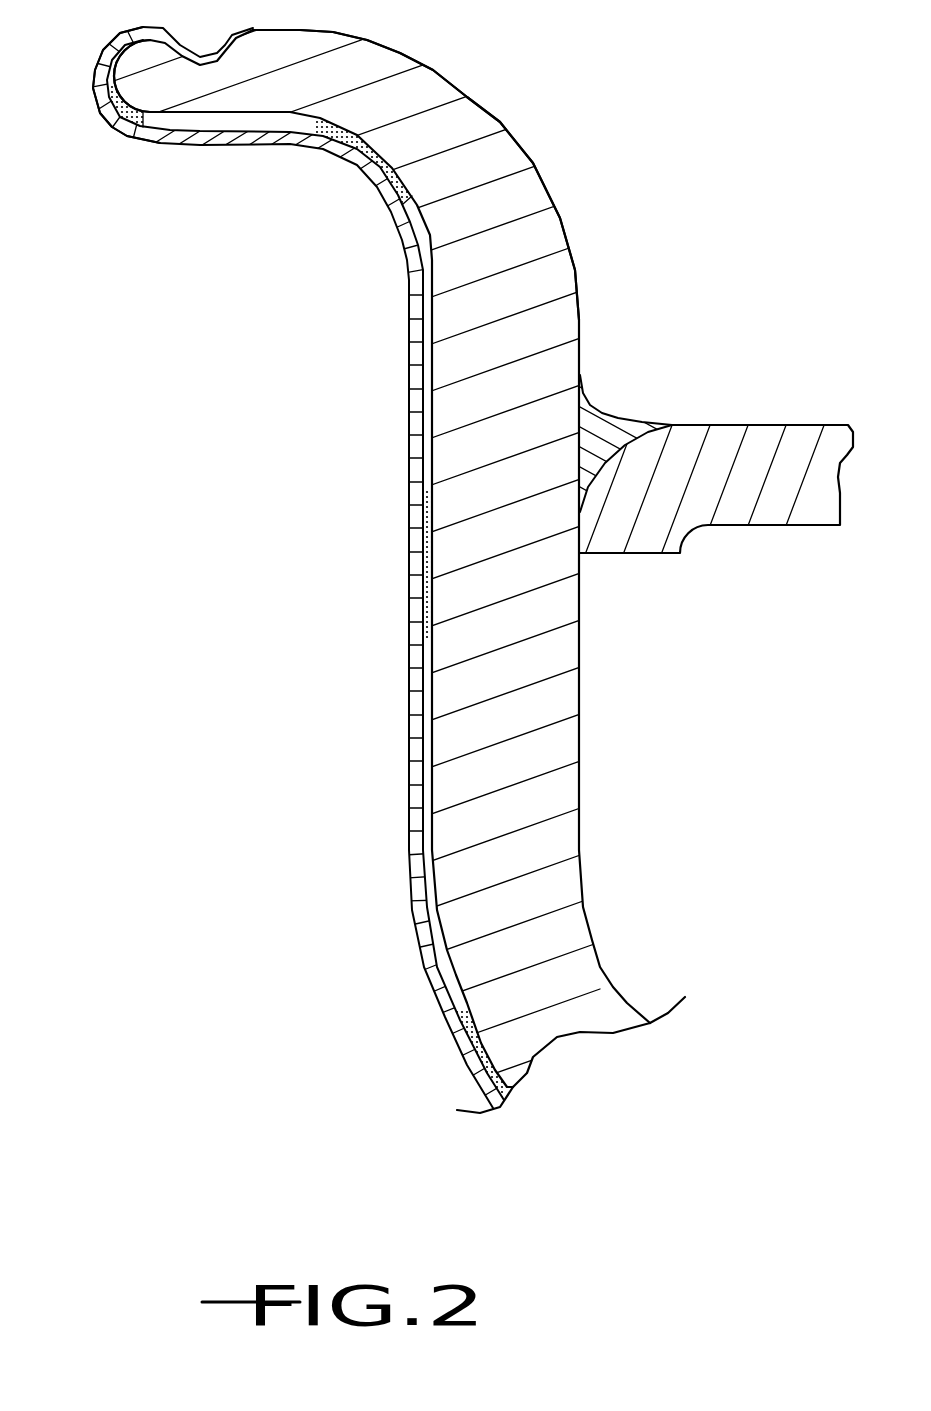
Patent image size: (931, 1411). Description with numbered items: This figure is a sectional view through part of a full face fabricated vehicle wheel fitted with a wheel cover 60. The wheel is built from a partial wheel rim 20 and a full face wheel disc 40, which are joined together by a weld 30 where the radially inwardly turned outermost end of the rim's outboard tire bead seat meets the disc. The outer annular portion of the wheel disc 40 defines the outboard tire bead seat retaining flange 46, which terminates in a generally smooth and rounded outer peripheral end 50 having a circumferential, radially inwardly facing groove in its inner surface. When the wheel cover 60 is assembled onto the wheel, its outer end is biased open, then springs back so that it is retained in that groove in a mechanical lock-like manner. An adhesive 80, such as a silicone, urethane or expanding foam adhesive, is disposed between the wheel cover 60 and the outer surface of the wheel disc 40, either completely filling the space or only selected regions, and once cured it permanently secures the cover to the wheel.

The wheel rim 20 is at (747, 545).
The weld 30 is at (606, 403).
The wheel disc 40 is at (597, 930).
The outboard tire bead seat retaining flange 46 is at (470, 104).
The outer peripheral end 50 is at (137, 88).
The wheel cover 60 is at (410, 968).
The adhesive 80 is at (123, 122).